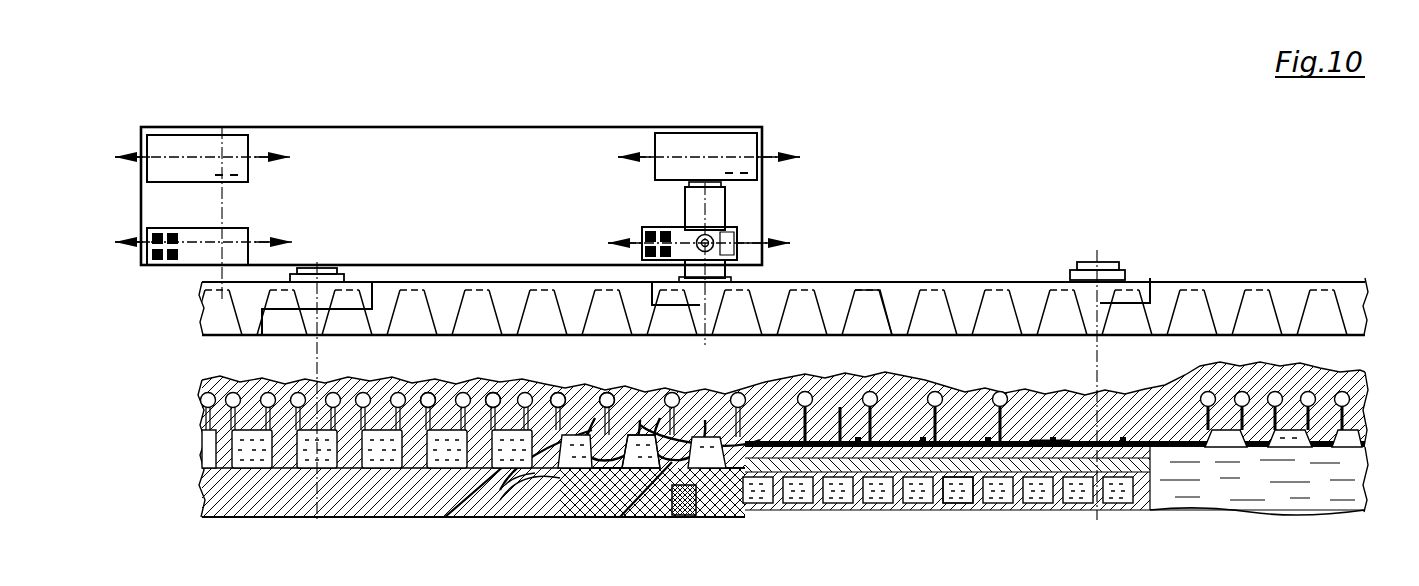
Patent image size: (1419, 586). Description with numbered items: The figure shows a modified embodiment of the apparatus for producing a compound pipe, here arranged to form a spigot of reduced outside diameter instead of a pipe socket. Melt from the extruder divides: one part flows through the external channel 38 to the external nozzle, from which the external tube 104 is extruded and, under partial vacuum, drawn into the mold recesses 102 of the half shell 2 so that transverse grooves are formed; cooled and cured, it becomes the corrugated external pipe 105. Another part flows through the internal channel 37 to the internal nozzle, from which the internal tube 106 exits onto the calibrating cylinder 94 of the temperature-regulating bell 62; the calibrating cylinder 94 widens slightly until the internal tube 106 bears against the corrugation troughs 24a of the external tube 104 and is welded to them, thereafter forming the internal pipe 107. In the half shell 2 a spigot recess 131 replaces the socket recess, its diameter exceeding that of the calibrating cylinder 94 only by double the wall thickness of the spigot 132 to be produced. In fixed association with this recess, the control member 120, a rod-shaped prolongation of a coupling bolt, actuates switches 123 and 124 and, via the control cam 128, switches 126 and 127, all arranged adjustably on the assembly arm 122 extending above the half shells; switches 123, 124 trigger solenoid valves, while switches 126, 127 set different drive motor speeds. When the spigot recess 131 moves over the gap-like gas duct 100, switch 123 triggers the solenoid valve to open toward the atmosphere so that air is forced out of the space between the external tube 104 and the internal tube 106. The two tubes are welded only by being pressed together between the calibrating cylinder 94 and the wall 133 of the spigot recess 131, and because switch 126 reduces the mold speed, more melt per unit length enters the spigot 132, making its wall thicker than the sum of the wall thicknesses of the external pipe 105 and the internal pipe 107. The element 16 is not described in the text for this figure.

The half shell 2 is at (1206, 264).
The corrugated support plate 16 is at (892, 307).
The corrugation troughs 24a is at (1308, 445).
The internal channel 37 is at (540, 405).
The external channel 38 is at (432, 405).
The temperature-regulating bell 62 is at (840, 440).
The calibrating cylinder 94 is at (957, 467).
The gap-like gas duct 100 is at (640, 395).
The mold recesses 102 is at (222, 127).
The external tube 104 is at (482, 400).
The corrugated external pipe 105 is at (1347, 447).
The internal tube 106 is at (600, 395).
The internal pipe 107 is at (1362, 450).
The control member 120 is at (712, 215).
The assembly arm 122 is at (330, 195).
The switch 123 is at (177, 147).
The switch 124 is at (693, 145).
The switch 126 is at (202, 238).
The switch 127 is at (642, 240).
The control cam 128 is at (727, 245).
The spigot recess 131 is at (1050, 443).
The spigot 132 is at (1078, 393).
The wall of the spigot recess 133 is at (1150, 393).